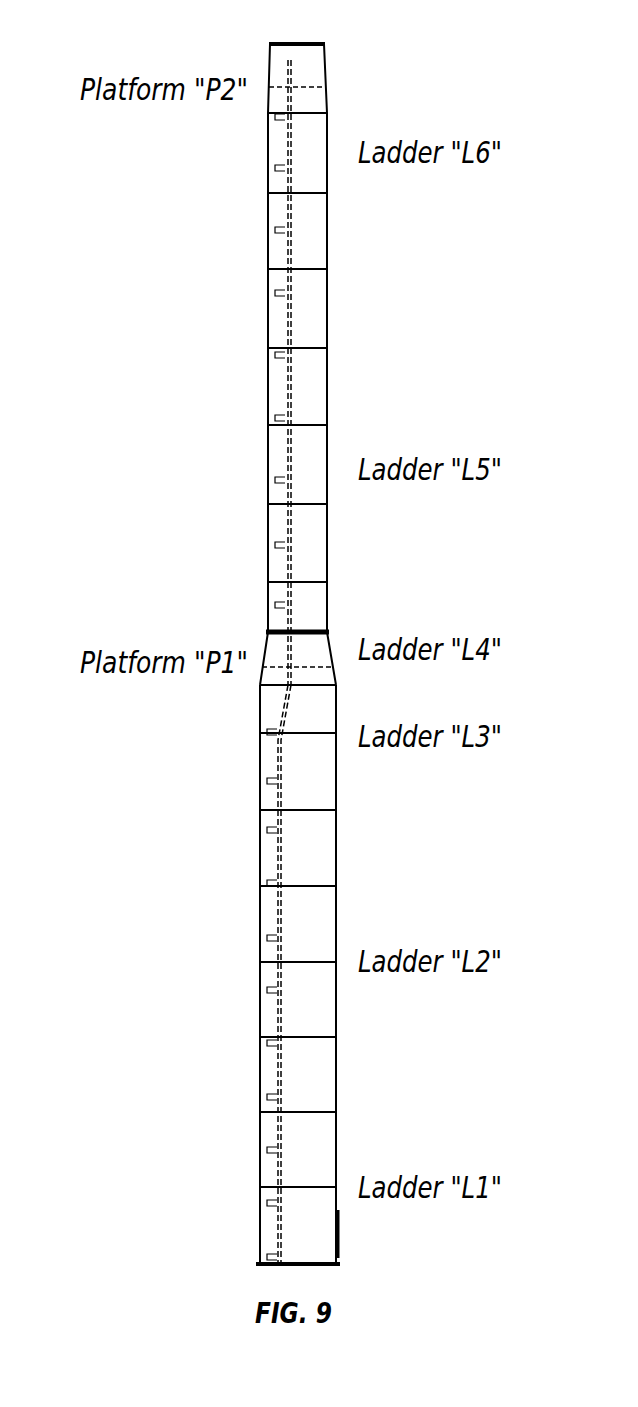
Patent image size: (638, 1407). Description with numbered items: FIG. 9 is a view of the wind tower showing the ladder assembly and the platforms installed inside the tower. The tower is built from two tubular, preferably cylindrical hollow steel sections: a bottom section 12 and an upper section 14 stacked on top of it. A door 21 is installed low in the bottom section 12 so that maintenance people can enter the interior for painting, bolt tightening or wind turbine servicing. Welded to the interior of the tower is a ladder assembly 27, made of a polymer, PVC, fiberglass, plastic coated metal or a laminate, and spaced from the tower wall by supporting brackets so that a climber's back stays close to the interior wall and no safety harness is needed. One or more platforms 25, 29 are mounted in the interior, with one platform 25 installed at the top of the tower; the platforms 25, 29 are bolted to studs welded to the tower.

The bottom section 12 is at (260, 925).
The upper section 14 is at (268, 386).
The door 21 is at (340, 1232).
The platform 25 is at (326, 86).
The ladder assembly 27 is at (292, 80).
The platform 29 is at (292, 44).